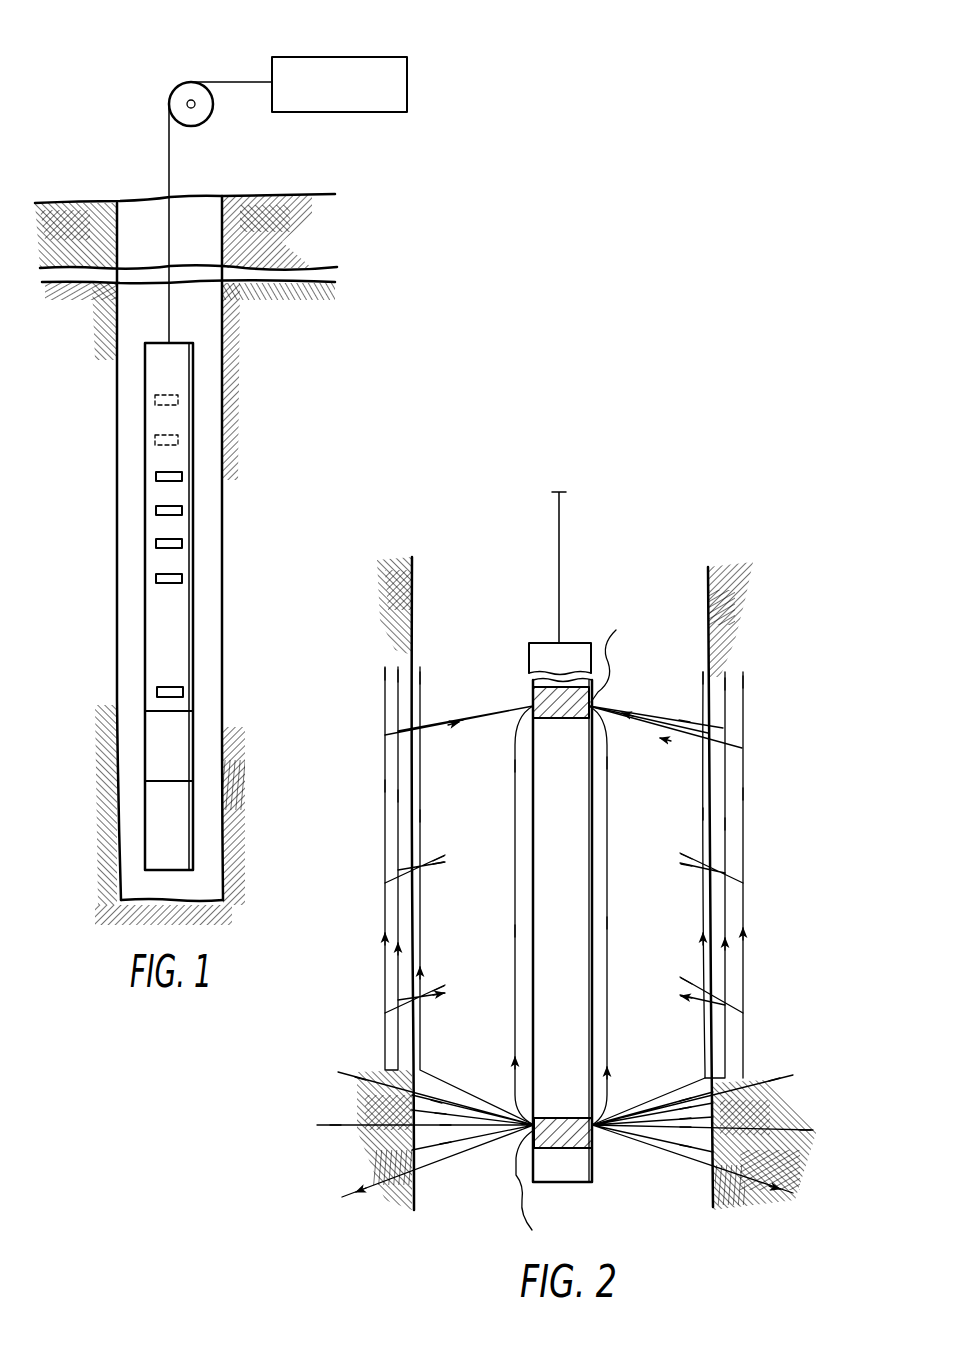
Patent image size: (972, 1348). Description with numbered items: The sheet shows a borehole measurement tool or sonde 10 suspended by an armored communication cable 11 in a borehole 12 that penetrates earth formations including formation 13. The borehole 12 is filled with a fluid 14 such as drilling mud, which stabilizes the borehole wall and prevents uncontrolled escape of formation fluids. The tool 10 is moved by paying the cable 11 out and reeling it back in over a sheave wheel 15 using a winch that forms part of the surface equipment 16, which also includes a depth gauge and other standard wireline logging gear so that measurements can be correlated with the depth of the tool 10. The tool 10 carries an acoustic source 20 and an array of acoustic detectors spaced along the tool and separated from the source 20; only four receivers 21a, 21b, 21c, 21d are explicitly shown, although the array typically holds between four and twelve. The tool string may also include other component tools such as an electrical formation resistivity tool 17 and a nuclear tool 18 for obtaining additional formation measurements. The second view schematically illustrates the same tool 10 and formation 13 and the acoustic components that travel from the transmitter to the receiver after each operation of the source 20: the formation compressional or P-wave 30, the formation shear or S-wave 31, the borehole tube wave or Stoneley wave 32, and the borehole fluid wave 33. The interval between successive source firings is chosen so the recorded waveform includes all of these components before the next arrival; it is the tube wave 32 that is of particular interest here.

In FIG. 1, the borehole measurement tool 10 is at (132, 581).
In FIG. 2, the borehole measurement tool 10 is at (533, 819).
In FIG. 1, the armored communication cable 11 is at (168, 166).
In FIG. 1, the borehole 12 is at (220, 372).
In FIG. 1, the formation 13 is at (103, 656).
In FIG. 2, the formation 13 is at (615, 880).
In FIG. 1, the fluid 14 is at (154, 324).
In FIG. 1, the sheave wheel 15 is at (201, 111).
In FIG. 1, the surface equipment 16 is at (365, 55).
In FIG. 1, the electrical formation resistivity tool 17 is at (181, 762).
In FIG. 1, the nuclear tool 18 is at (183, 837).
In FIG. 1, the acoustic source 20 is at (185, 692).
In FIG. 1, the acoustic receiver 21a is at (186, 578).
In FIG. 1, the acoustic receiver 21b is at (189, 543).
In FIG. 1, the acoustic receiver 21c is at (189, 508).
In FIG. 1, the acoustic receiver 21d is at (189, 475).
In FIG. 2, the compressional wave 30 is at (728, 1032).
In FIG. 2, the shear wave 31 is at (385, 1023).
In FIG. 2, the Stoneley wave 32 is at (705, 920).
In FIG. 2, the borehole fluid wave 33 is at (515, 948).